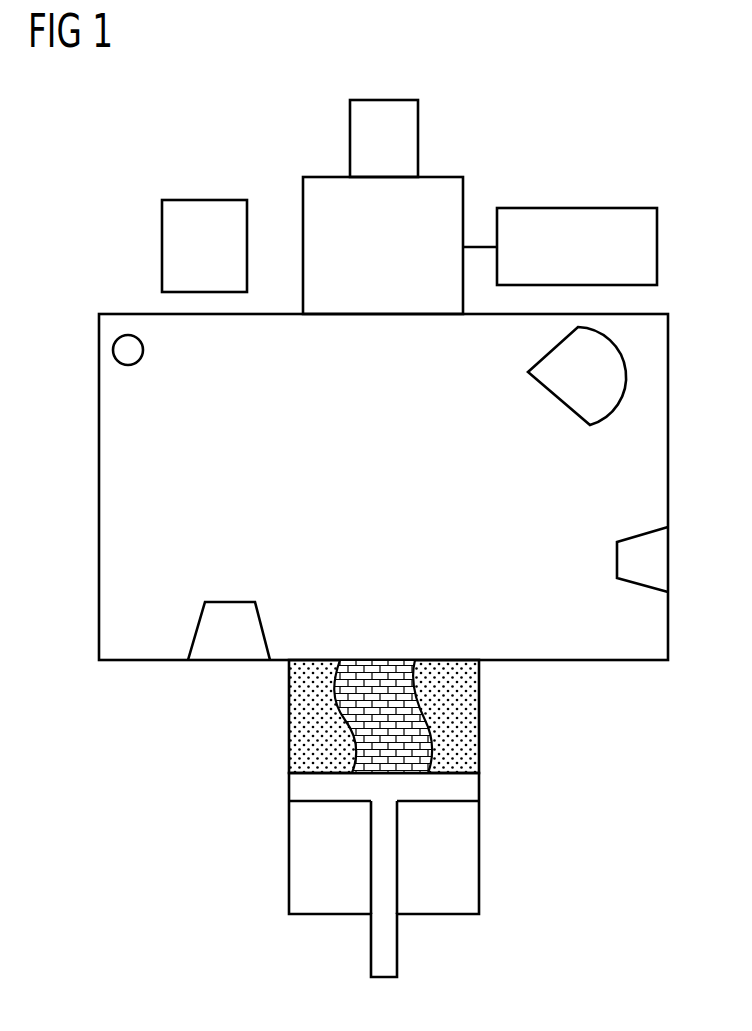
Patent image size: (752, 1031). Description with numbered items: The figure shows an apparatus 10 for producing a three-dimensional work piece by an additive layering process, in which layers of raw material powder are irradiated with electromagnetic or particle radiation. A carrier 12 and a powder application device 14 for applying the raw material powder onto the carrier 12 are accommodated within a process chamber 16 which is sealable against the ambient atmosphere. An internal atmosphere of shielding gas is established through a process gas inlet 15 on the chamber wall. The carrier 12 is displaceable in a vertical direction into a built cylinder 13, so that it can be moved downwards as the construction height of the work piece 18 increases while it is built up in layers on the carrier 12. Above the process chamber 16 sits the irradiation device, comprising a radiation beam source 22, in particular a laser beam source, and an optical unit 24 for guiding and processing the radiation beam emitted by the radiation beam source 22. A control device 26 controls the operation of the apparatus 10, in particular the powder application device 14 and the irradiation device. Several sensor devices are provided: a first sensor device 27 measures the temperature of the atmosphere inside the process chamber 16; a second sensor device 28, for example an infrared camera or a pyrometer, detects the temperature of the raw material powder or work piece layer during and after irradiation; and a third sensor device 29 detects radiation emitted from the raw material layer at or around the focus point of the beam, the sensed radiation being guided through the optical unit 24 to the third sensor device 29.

The apparatus 10 is at (660, 108).
The carrier 12 is at (470, 787).
The built cylinder 13 is at (300, 713).
The powder application device 14 is at (230, 610).
The process gas inlet 15 is at (617, 560).
The process chamber 16 is at (99, 486).
The work piece 18 is at (410, 720).
The radiation beam source 22 is at (577, 217).
The optical unit 24 is at (447, 190).
The control device 26 is at (204, 210).
The first sensor device 27 is at (136, 350).
The second sensor device 28 is at (563, 390).
The third sensor device 29 is at (385, 108).